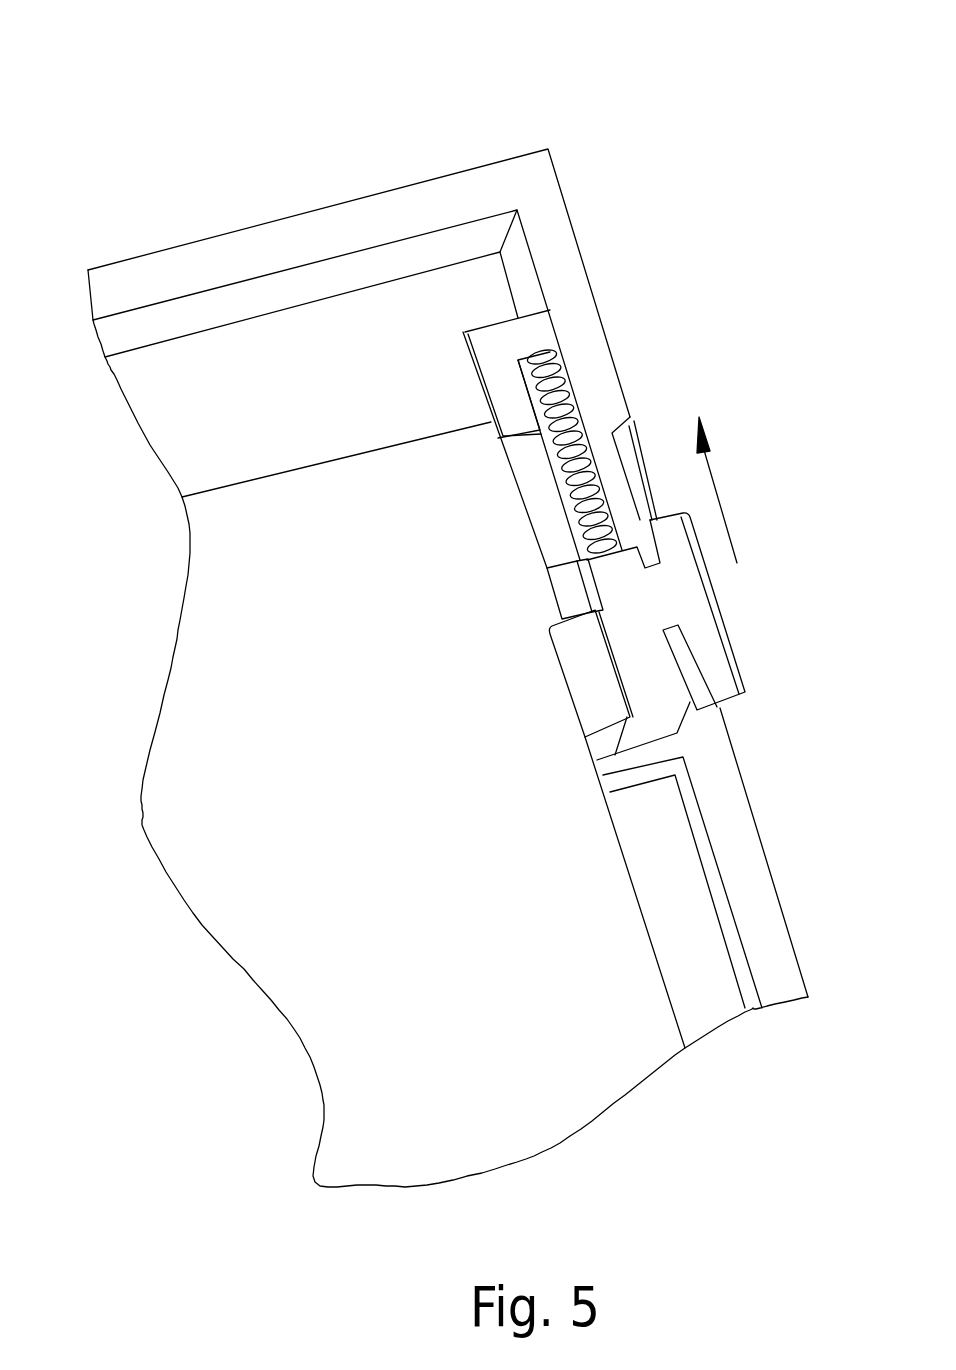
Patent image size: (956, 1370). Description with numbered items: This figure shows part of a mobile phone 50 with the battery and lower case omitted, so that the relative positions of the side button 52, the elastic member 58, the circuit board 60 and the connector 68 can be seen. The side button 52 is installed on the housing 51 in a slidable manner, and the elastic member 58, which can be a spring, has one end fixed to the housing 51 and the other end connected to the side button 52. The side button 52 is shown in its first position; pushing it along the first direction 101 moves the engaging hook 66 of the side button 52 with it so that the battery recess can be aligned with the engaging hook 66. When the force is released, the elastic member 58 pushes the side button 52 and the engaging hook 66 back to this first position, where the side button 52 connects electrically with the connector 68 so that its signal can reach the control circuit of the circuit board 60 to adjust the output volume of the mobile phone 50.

The mobile phone 50 is at (620, 100).
The housing 51 is at (260, 253).
The side button 52 is at (693, 580).
The elastic member 58 is at (565, 362).
The circuit board 60 is at (208, 657).
The engaging hook 66 is at (587, 662).
The connector 68 is at (568, 598).
The first direction 101 is at (715, 470).